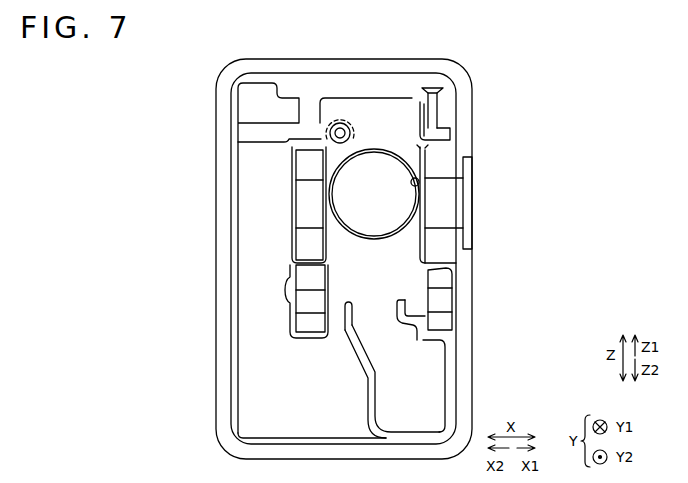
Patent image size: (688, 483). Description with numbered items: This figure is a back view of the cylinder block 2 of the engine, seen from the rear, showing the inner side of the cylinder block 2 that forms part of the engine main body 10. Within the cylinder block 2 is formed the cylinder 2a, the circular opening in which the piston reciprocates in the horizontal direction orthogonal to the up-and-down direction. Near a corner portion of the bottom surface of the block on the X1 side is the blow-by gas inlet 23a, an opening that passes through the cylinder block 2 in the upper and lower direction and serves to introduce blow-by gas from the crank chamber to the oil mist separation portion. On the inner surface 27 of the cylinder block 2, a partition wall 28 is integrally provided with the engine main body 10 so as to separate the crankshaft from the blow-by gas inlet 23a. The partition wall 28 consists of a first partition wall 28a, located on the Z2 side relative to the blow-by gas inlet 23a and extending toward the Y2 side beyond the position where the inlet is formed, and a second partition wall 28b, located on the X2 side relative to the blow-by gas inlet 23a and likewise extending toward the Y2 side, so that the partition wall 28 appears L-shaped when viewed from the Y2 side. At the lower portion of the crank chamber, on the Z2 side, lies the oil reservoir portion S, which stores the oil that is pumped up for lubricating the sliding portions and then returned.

The cylinder block 2 is at (530, 92).
The engine main body 10 is at (343, 258).
The inner surface 27 is at (372, 92).
The partition wall 28 is at (479, 85).
The first partition wall 28a is at (452, 126).
The second partition wall 28b is at (437, 88).
The blow-by gas inlet 23a is at (442, 101).
The cylinder 2a is at (419, 181).
The oil reservoir portion S is at (419, 385).